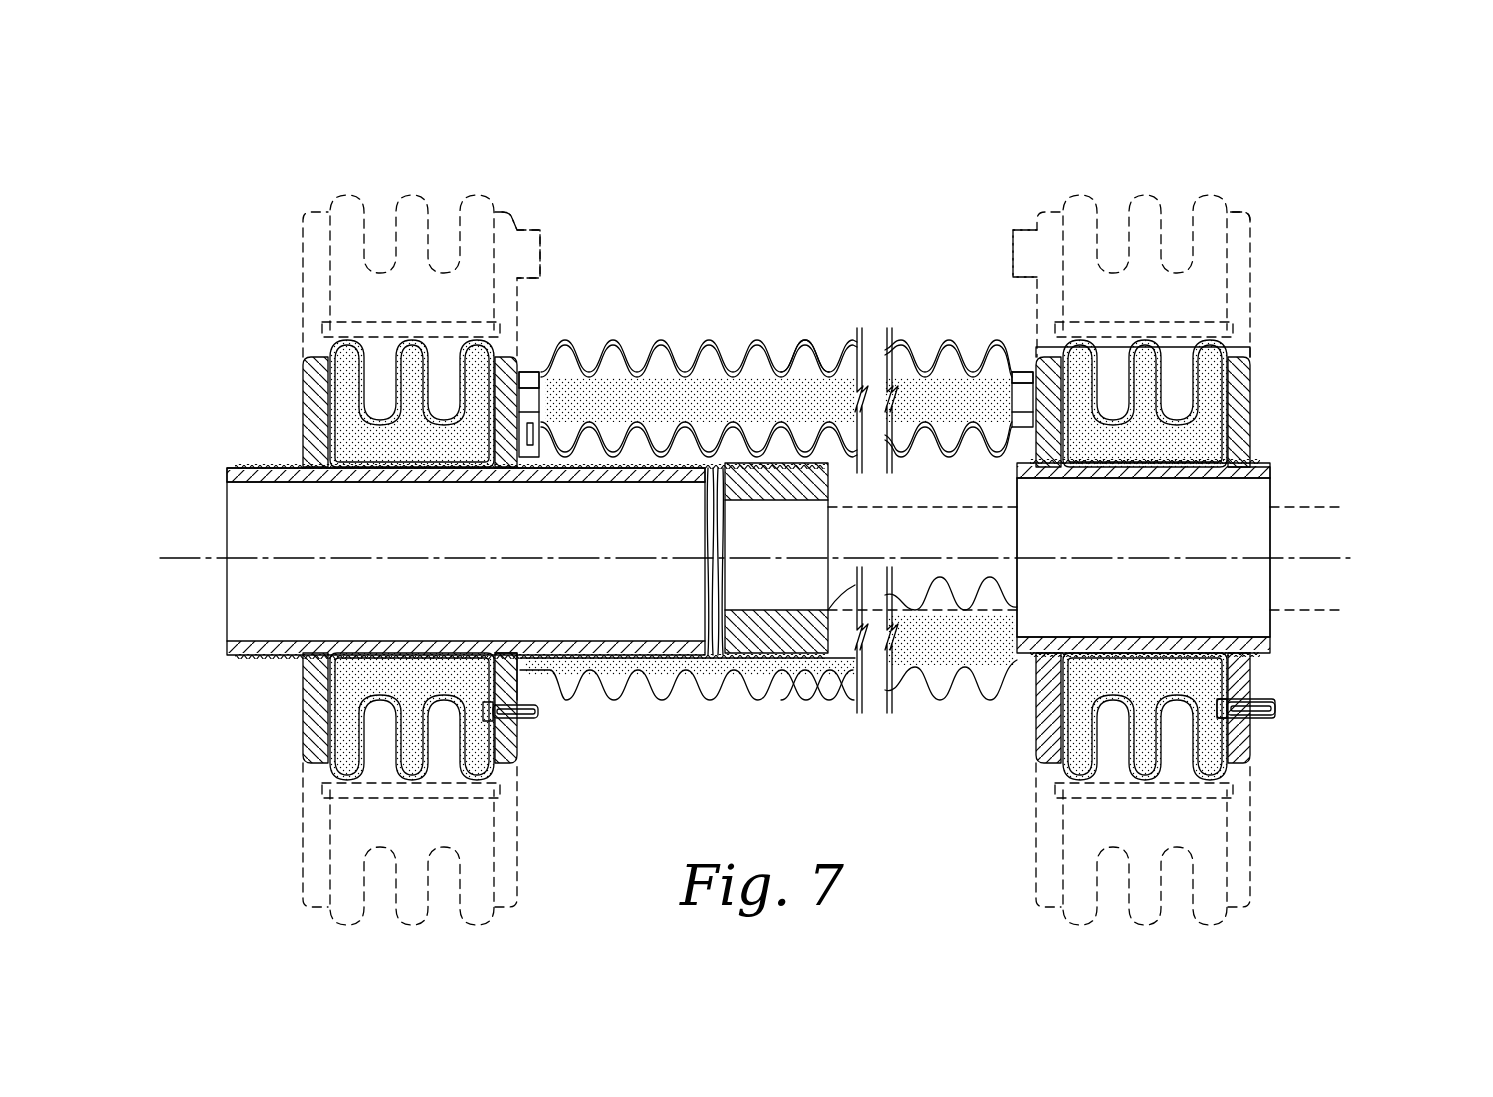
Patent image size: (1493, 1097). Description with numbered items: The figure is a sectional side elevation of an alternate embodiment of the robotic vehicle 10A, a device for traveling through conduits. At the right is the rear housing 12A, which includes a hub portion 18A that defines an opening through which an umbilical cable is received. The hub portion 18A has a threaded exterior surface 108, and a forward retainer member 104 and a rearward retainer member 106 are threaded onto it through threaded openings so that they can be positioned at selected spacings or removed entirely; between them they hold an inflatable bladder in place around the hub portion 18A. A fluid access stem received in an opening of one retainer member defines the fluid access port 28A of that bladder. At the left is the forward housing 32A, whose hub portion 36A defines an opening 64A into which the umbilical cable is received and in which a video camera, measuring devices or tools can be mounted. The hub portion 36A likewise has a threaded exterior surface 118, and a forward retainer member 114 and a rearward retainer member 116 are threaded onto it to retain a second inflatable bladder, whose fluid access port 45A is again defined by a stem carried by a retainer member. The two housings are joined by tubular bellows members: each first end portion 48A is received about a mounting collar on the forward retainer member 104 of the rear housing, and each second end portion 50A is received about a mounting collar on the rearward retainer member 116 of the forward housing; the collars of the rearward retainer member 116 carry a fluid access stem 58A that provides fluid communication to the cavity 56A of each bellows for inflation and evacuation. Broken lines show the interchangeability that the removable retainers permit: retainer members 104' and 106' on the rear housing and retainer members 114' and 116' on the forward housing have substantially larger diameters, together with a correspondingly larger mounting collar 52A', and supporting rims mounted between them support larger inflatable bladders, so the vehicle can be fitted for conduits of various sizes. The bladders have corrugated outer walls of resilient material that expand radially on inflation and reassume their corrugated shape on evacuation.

The robotic vehicle 10A is at (1285, 192).
The rear housing 12A is at (1253, 411).
The hub portion 18A is at (1017, 545).
The fluid access port 28A is at (1282, 708).
The forward housing 32A is at (303, 420).
The hub portion 36A is at (256, 467).
The fluid access port 45A is at (522, 660).
The first end portion 48A is at (1022, 372).
The second end portion 50A is at (522, 372).
The mounting collar 52A' is at (609, 220).
The cavity 56A is at (725, 340).
The nut 58A is at (535, 428).
The opening 64A is at (245, 537).
The forward retainer member 104 is at (1105, 780).
The forward retainer member 104' is at (998, 204).
The rearward retainer member 106 is at (1301, 391).
The rearward retainer member 106' is at (1215, 284).
The threaded exterior surface 108 is at (1010, 700).
The forward retainer member 114 is at (346, 835).
The forward retainer member 114' is at (374, 258).
The rearward retainer member 116 is at (554, 618).
The rearward retainer member 116' is at (561, 167).
The threaded exterior surface 118 is at (300, 652).